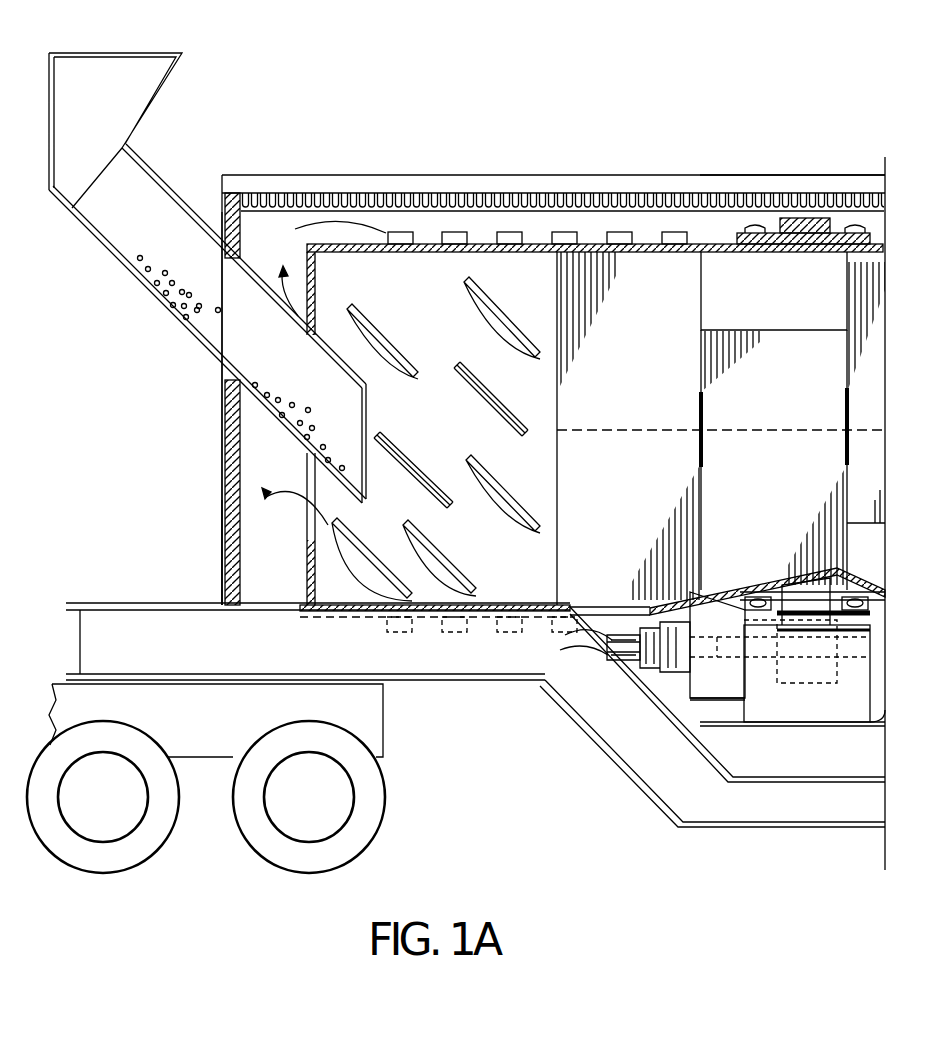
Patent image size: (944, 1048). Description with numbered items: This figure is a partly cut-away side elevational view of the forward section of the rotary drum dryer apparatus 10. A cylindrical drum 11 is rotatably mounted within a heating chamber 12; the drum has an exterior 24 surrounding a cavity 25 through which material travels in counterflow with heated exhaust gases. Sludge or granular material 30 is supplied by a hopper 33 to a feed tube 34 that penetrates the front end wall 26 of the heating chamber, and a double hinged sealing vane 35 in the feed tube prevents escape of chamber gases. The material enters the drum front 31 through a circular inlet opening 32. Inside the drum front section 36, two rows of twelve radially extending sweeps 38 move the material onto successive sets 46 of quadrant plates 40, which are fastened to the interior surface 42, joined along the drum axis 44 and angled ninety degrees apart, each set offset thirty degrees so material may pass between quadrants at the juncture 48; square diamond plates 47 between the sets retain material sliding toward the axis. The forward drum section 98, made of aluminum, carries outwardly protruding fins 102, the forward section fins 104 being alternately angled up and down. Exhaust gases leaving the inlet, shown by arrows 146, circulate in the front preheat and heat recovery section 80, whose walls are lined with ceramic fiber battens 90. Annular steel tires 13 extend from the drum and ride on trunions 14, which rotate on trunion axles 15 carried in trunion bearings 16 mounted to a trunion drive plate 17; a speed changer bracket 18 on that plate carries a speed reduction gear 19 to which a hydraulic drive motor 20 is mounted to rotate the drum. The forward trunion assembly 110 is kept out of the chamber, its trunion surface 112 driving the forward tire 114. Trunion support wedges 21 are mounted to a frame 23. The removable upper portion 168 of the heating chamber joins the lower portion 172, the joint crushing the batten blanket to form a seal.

The rotary drum dryer apparatus 10 is at (360, 172).
The cylindrical drum 11 is at (426, 243).
The heating chamber 12 is at (600, 177).
The annular steel tires 13 is at (815, 230).
The trunions 14 is at (755, 655).
The trunion axles 15 is at (770, 625).
The trunion bearings 16 is at (850, 620).
The trunion drive plate 17 is at (692, 700).
The speed changer bracket 18 is at (688, 683).
The speed reduction gear 19 is at (650, 662).
The hydraulic drive motor 20 is at (622, 637).
The trunion support wedges 21 is at (740, 708).
The frame 23 is at (470, 680).
The drum exterior 24 is at (430, 244).
The cavity 25 is at (557, 244).
The front end wall 26 is at (218, 477).
The granular material 30 is at (240, 408).
The drum front 31 is at (310, 597).
The inlet opening 32 is at (310, 540).
The hopper 33 is at (177, 68).
The feed tube 34 is at (345, 358).
The sealing vane 35 is at (220, 265).
The drum front section 36 is at (502, 244).
The sweeps 38 is at (497, 320).
The quadrant plates 40 is at (640, 379).
The interior surface 42 is at (670, 255).
The drum axis 44 is at (556, 430).
The sets of quadrant plates 46 is at (558, 548).
The square diamond plates 47 is at (555, 405).
The juncture 48 is at (845, 410).
The preheat and heat recovery section 80 is at (648, 205).
The ceramic fiber battens 90 is at (630, 205).
The forward drum section 98 is at (568, 627).
The fins 102 is at (317, 225).
The forward section fins 104 is at (402, 232).
The forward trunion assembly 110 is at (882, 722).
The trunion surface 112 is at (802, 630).
The forward tire 114 is at (835, 252).
The gas flow arrows 146 is at (333, 296).
The upper portion of heating chamber 168 is at (720, 177).
The lower portion of heating chamber 172 is at (222, 592).